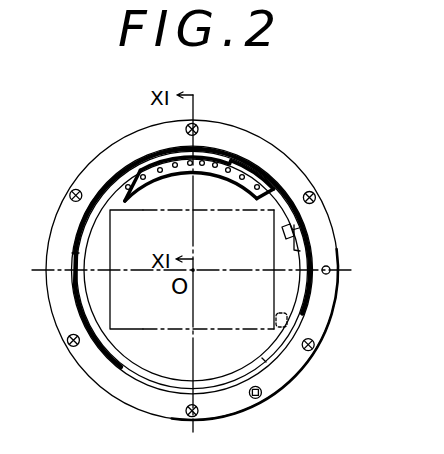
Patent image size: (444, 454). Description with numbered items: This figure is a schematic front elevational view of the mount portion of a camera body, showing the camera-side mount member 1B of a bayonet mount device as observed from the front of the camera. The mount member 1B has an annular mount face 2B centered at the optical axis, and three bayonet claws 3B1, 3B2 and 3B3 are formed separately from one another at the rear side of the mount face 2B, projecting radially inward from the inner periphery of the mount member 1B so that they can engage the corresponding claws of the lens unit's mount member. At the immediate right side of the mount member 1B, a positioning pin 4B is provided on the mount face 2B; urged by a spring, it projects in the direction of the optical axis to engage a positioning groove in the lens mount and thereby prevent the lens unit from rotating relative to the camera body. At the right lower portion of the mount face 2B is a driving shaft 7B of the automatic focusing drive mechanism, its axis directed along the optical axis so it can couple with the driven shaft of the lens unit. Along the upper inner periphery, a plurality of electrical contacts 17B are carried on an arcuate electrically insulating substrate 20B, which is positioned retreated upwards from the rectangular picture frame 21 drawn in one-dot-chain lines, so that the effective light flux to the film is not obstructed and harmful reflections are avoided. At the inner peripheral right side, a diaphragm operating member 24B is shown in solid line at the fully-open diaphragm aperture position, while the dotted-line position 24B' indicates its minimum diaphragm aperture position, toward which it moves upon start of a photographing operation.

The mount member of the camera body 1B is at (136, 133).
The annular mount face 2B is at (102, 165).
The bayonet claw 3B1 is at (226, 148).
The bayonet claw 3B2 is at (80, 305).
The bayonet claw 3B3 is at (302, 313).
The positioning pin 4B is at (326, 275).
The driving shaft 7B is at (268, 395).
The electrical contacts 17B is at (130, 190).
The electrically insulating substrate 20B is at (259, 165).
The rectangular picture frame 21 is at (153, 330).
The diaphragm operating member 24B is at (219, 269).
The minimum diaphragm aperture position of the diaphragm operating member 24B' is at (323, 346).